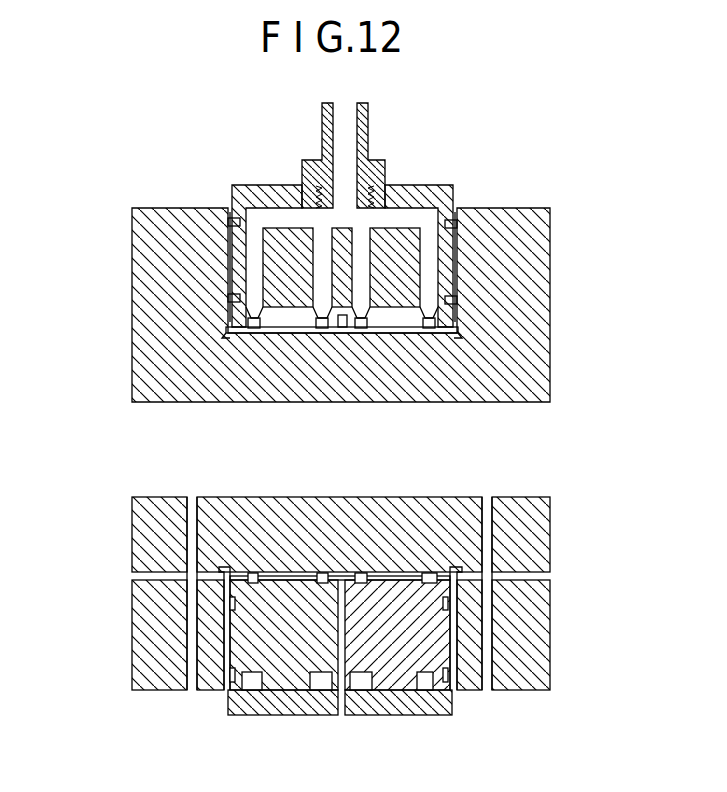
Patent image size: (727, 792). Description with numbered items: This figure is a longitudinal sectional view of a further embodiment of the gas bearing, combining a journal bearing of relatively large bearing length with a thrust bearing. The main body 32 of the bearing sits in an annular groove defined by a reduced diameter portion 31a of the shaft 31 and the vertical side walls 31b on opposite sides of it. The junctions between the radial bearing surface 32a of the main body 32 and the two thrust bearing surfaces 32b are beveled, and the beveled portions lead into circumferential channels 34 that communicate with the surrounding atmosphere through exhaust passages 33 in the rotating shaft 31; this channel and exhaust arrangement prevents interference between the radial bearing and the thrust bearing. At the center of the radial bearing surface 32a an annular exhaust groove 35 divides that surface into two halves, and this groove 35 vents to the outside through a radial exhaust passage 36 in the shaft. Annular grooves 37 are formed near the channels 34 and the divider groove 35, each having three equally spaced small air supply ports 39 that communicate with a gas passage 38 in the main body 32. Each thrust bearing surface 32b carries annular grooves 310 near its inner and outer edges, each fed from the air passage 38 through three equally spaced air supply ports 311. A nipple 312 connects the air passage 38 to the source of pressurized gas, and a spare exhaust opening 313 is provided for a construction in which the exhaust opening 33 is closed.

The shaft 31 is at (521, 225).
The reduced diameter portion 31a is at (392, 577).
The vertical side walls 31b is at (226, 688).
The annular grooves 310 is at (231, 221).
The air supply ports 311 is at (237, 221).
The nipple 312 is at (368, 110).
The spare exhaust opening 313 is at (487, 652).
The main body of the bearing 32 is at (398, 245).
The radial bearing surface 32a is at (276, 575).
The thrust bearing surfaces 32b is at (227, 655).
The exhaust passages 33 is at (133, 576).
The circumferential channels 34 is at (226, 331).
The annular exhaust groove 35 is at (343, 574).
The radial exhaust passage 36 is at (341, 716).
The annular grooves 37 is at (254, 334).
The gas passage 38 is at (276, 218).
The air supply ports 39 is at (248, 325).